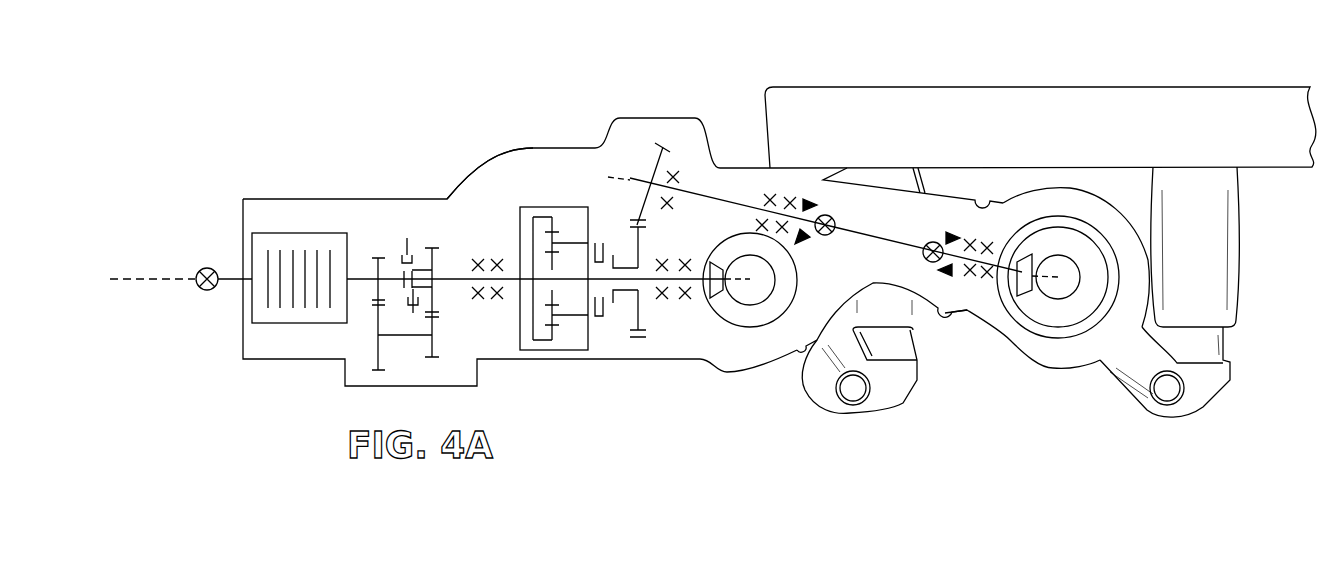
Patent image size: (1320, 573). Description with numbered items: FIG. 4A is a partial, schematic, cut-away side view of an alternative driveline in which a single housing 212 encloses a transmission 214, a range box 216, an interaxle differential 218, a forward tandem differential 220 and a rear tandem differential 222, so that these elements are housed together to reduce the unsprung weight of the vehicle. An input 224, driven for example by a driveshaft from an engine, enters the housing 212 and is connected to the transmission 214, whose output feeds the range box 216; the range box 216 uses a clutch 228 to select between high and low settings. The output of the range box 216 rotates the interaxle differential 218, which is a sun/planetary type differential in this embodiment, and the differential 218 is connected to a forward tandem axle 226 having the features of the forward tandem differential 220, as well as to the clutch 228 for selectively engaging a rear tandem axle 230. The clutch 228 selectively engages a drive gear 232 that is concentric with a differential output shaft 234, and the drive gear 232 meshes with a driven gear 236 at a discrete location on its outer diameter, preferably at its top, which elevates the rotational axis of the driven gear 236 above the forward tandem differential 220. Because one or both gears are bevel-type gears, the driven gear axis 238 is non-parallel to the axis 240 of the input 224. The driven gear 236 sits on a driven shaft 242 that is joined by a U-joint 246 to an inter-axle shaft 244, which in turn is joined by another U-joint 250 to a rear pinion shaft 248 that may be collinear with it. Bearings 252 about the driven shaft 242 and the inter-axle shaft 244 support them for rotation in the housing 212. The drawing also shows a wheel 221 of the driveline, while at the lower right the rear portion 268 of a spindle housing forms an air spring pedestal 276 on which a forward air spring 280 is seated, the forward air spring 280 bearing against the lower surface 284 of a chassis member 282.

The housing 212 is at (548, 147).
The transmission 214 is at (293, 222).
The range box 216 is at (406, 210).
The interaxle differential 218 is at (496, 185).
The forward tandem differential 220 is at (748, 240).
The wheel 221 is at (722, 240).
The rear tandem differential 222 is at (1064, 240).
The input 224 is at (205, 268).
The forward tandem axle 226 is at (758, 389).
The clutch 228 is at (602, 352).
The rear tandem axle 230 is at (1044, 380).
The drive gear 232 is at (634, 224).
The differential output shaft 234 is at (637, 340).
The driven gear 236 is at (658, 148).
The driven gear axis 238 is at (630, 175).
The axis of the input 240 is at (151, 283).
The driven shaft 242 is at (719, 196).
The inter-axle shaft 244 is at (848, 228).
The U-joint 246 is at (835, 216).
The rear pinion shaft 248 is at (983, 260).
The U-joint 250 is at (929, 242).
The bearings 252 is at (678, 170).
The rear portion of the spindle housing 268 is at (856, 428).
The air spring pedestal 276 is at (900, 398).
The forward air spring 280 is at (917, 330).
The chassis member 282 is at (1262, 110).
The lower surface 284 is at (1297, 172).